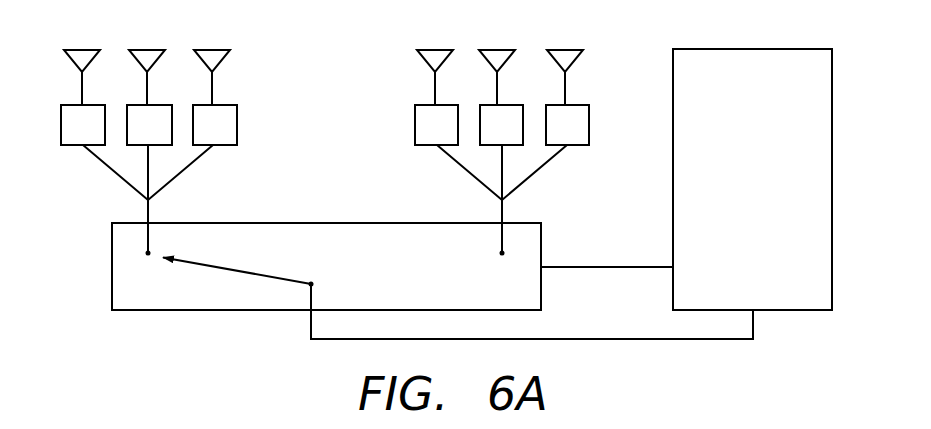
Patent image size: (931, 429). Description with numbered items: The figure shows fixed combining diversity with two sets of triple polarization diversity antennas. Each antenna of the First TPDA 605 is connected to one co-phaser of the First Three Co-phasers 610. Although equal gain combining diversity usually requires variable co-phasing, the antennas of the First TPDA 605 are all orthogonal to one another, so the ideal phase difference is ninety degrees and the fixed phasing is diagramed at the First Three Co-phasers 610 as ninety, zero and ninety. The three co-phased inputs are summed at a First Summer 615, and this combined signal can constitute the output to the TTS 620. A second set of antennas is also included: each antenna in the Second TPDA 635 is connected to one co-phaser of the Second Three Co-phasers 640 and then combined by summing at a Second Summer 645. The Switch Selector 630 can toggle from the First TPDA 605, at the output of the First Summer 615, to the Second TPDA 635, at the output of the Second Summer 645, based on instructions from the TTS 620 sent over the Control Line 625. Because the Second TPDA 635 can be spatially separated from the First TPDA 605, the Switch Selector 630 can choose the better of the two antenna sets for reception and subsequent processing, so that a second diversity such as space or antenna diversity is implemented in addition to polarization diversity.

The First TPDA 605 is at (253, 50).
The First Three Co-phasers 610 is at (243, 103).
The First Summer 615 is at (97, 180).
The TTS 620 is at (733, 48).
The Control Line 625 is at (652, 265).
The Switch Selector 630 is at (187, 313).
The Second TPDA 635 is at (397, 50).
The Second Three Co-phasers 640 is at (407, 103).
The Second Summer 645 is at (551, 178).